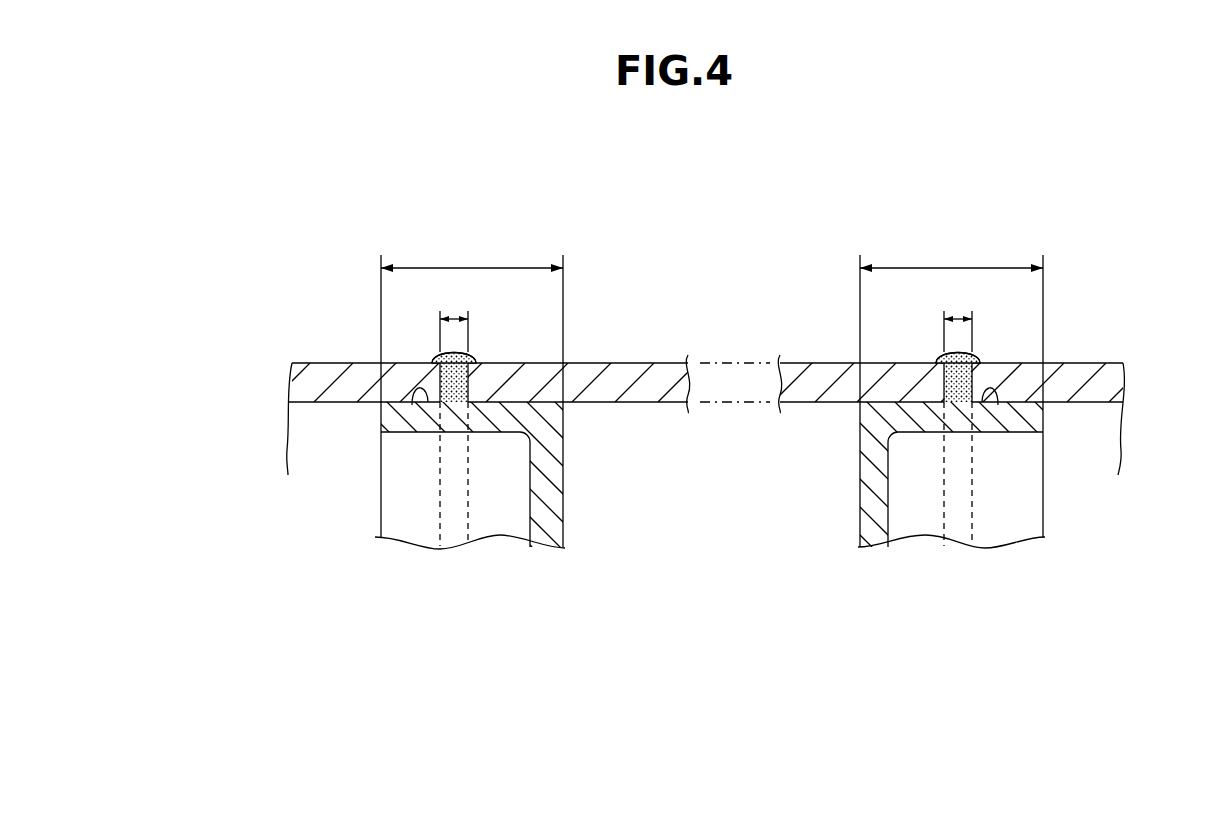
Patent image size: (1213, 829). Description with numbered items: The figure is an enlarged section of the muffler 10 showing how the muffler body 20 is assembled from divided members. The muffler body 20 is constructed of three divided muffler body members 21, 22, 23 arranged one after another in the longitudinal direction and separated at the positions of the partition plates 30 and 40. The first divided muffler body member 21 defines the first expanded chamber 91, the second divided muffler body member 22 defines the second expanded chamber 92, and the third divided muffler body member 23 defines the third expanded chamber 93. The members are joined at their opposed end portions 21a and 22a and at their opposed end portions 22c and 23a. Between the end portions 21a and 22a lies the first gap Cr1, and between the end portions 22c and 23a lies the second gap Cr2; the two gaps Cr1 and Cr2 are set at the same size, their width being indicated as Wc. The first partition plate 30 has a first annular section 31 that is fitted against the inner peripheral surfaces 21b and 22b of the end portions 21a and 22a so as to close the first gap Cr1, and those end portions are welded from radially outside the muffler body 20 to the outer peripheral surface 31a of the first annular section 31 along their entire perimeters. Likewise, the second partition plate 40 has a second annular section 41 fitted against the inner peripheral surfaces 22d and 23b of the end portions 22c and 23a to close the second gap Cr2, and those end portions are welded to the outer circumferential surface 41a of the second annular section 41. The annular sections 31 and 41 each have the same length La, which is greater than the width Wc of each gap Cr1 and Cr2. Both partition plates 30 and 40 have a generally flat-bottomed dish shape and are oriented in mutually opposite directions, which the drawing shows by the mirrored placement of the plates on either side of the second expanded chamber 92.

The semiconductor device 10 is at (203, 183).
The muffler body 20 is at (718, 292).
The first divided muffler body member 21 is at (327, 358).
The second divided muffler body member 22 is at (654, 358).
The third divided muffler body member 23 is at (1093, 358).
The opposed end portion of first divided muffler body member 21a is at (403, 371).
The inner peripheral surface of opposed end portion 21a 21b is at (365, 404).
The opposed end portion of second divided muffler body member 22a is at (520, 372).
The inner peripheral surface of opposed end portion 22a 22b is at (580, 404).
The opposed end portion of second divided muffler body member 22c is at (907, 372).
The inner peripheral surface of opposed end portion 22c 22d is at (847, 405).
The opposed end portion of third divided muffler body member 23a is at (1002, 371).
The inner peripheral surface of opposed end portion 23a 23b is at (1007, 403).
The first partition plate 30 is at (553, 518).
The first annular section 31 is at (500, 420).
The outer peripheral surface of first annular section 31a is at (412, 404).
The second partition plate 40 is at (870, 490).
The second annular section 41 is at (930, 420).
The outer circumferential surface of second annular section 41a is at (998, 404).
The first expanded chamber 91 is at (288, 566).
The second expanded chamber 92 is at (714, 566).
The third expanded chamber 93 is at (1158, 566).
The first gap Cr1 is at (465, 390).
The second gap Cr2 is at (969, 390).
The length dimension La is at (712, 319).
The width of gap Wc is at (707, 319).